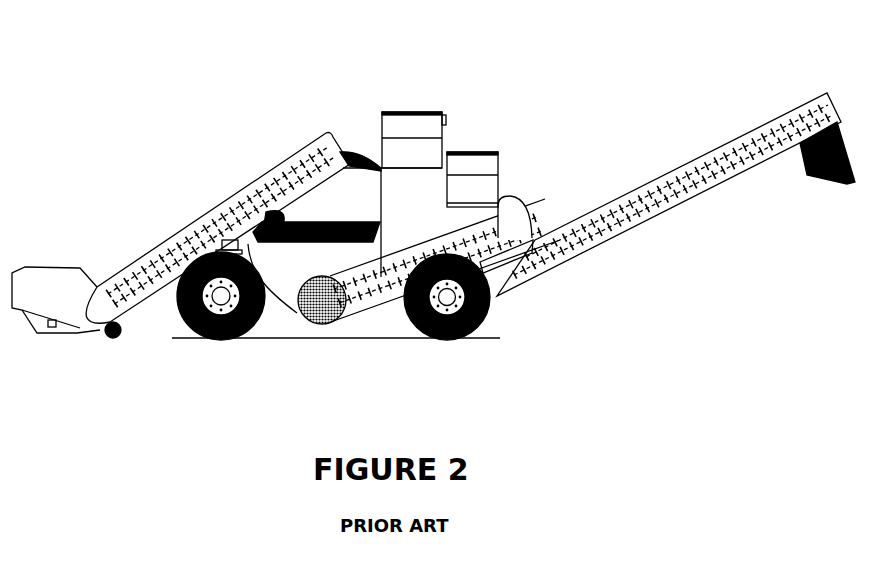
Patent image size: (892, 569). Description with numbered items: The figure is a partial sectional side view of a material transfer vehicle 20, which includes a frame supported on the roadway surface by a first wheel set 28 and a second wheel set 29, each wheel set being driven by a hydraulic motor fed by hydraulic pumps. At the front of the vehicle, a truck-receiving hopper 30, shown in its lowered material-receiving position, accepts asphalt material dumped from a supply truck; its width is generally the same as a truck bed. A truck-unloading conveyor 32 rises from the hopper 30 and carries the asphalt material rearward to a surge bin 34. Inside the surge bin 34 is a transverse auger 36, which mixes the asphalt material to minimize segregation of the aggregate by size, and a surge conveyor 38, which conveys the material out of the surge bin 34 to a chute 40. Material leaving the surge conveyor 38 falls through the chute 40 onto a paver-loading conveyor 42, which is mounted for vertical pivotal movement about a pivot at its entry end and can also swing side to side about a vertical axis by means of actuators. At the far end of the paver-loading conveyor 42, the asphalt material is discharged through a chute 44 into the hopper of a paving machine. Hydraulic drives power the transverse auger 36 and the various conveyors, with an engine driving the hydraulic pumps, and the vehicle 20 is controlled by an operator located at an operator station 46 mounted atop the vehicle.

The material transfer vehicle 20 is at (433, 208).
The first wheel set 28 is at (181, 306).
The second wheel set 29 is at (497, 313).
The truck-receiving hopper 30 is at (50, 262).
The truck-unloading conveyor 32 is at (197, 207).
The surge bin 34 is at (302, 265).
The transverse auger 36 is at (297, 315).
The surge conveyor 38 is at (398, 241).
The chute 40 is at (535, 236).
The paver-loading conveyor 42 is at (620, 196).
The chute 44 is at (799, 165).
The operator station 46 is at (450, 143).